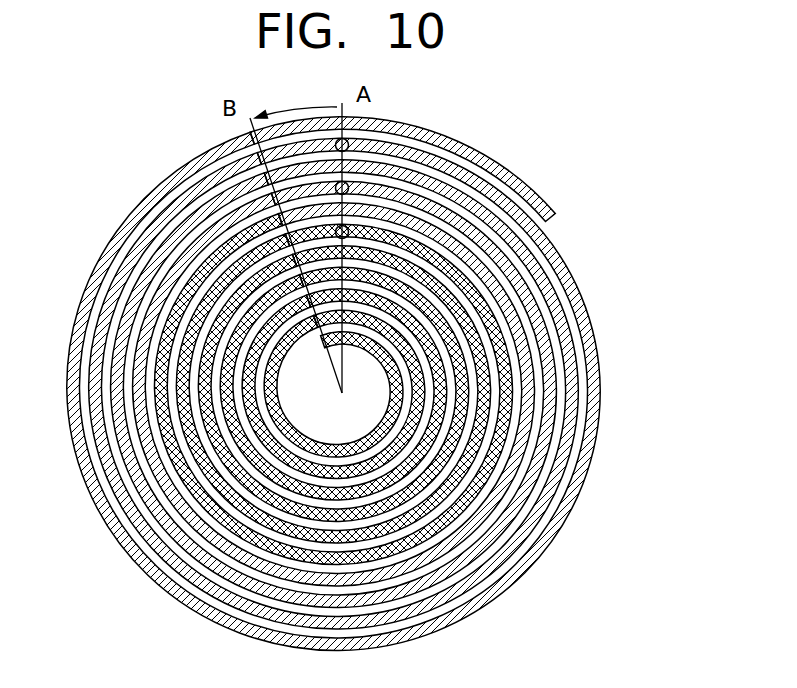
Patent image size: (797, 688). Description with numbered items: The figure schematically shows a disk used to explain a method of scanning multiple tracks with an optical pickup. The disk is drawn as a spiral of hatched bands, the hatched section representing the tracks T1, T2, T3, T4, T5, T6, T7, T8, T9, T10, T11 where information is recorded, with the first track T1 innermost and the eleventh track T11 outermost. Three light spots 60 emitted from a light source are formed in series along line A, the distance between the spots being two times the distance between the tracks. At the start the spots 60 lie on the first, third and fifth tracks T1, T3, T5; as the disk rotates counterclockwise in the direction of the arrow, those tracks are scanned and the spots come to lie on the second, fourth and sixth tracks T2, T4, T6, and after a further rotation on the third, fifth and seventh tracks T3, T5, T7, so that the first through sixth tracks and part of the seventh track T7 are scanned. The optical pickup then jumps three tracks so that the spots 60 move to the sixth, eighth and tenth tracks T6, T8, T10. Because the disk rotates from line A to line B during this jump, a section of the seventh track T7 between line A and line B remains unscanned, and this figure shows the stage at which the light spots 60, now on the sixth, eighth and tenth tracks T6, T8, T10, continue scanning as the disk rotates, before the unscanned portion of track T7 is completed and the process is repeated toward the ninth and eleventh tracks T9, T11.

The first track T1 is at (345, 340).
The second track T2 is at (345, 318).
The third track T3 is at (345, 297).
The fourth track T4 is at (345, 275).
The fifth track T5 is at (345, 253).
The sixth track T6 is at (349, 232).
The seventh track T7 is at (345, 210).
The eighth track T8 is at (349, 190).
The ninth track T9 is at (345, 168).
The tenth track T10 is at (349, 145).
The eleventh track T11 is at (345, 125).
The light spots 60 is at (335, 146).